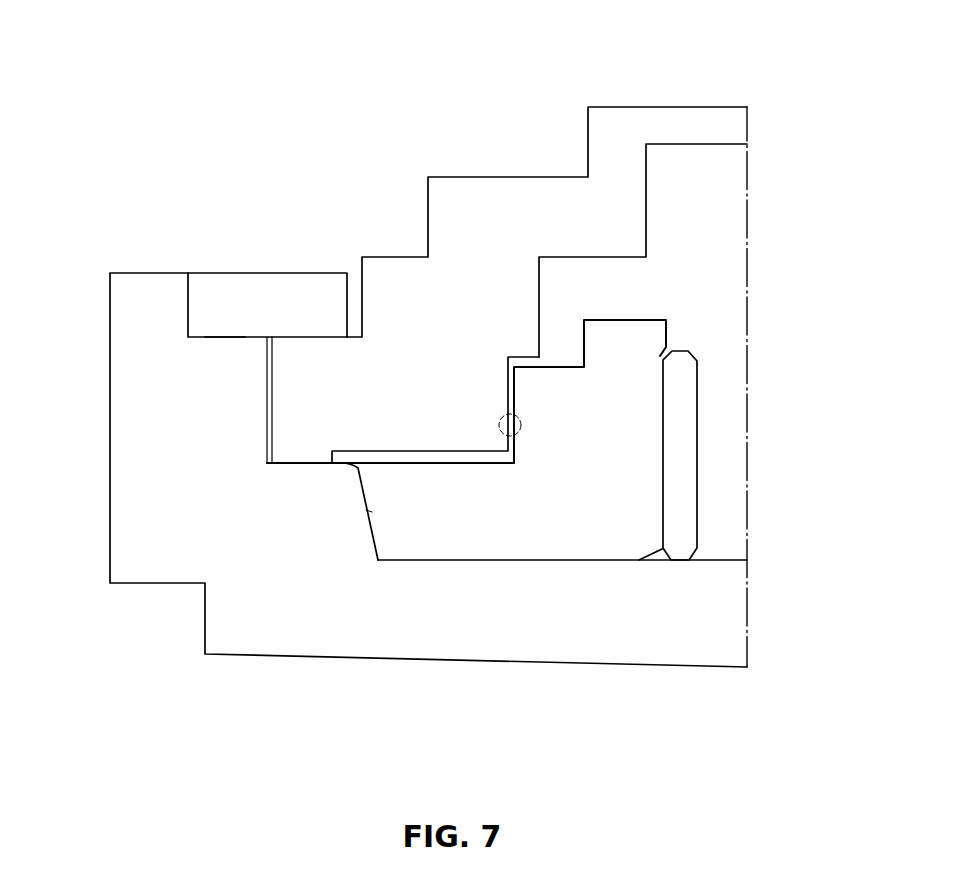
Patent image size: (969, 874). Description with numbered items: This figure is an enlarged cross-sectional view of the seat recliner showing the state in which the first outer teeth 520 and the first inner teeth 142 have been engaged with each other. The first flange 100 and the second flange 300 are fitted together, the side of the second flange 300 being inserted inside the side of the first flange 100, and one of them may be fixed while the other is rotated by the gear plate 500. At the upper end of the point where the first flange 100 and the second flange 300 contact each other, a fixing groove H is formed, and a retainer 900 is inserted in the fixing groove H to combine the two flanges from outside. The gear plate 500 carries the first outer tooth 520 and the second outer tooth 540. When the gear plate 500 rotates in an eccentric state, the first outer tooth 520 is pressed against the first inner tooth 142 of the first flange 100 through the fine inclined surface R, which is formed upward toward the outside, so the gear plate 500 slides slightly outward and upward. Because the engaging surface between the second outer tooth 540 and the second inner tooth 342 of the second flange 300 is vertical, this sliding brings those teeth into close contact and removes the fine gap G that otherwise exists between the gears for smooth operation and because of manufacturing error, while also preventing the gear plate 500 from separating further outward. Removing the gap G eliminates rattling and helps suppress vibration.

The first flange 100 is at (623, 630).
The first inner tooth 142 is at (338, 502).
The second flange 300 is at (618, 128).
The second inner tooth 342 is at (477, 405).
The gear plate 500 is at (620, 498).
The first outer tooth 520 is at (457, 512).
The second outer tooth 540 is at (540, 385).
The retainer 900 is at (258, 290).
The gap G is at (522, 423).
The fixing groove H is at (225, 340).
The inclined surface R is at (368, 512).